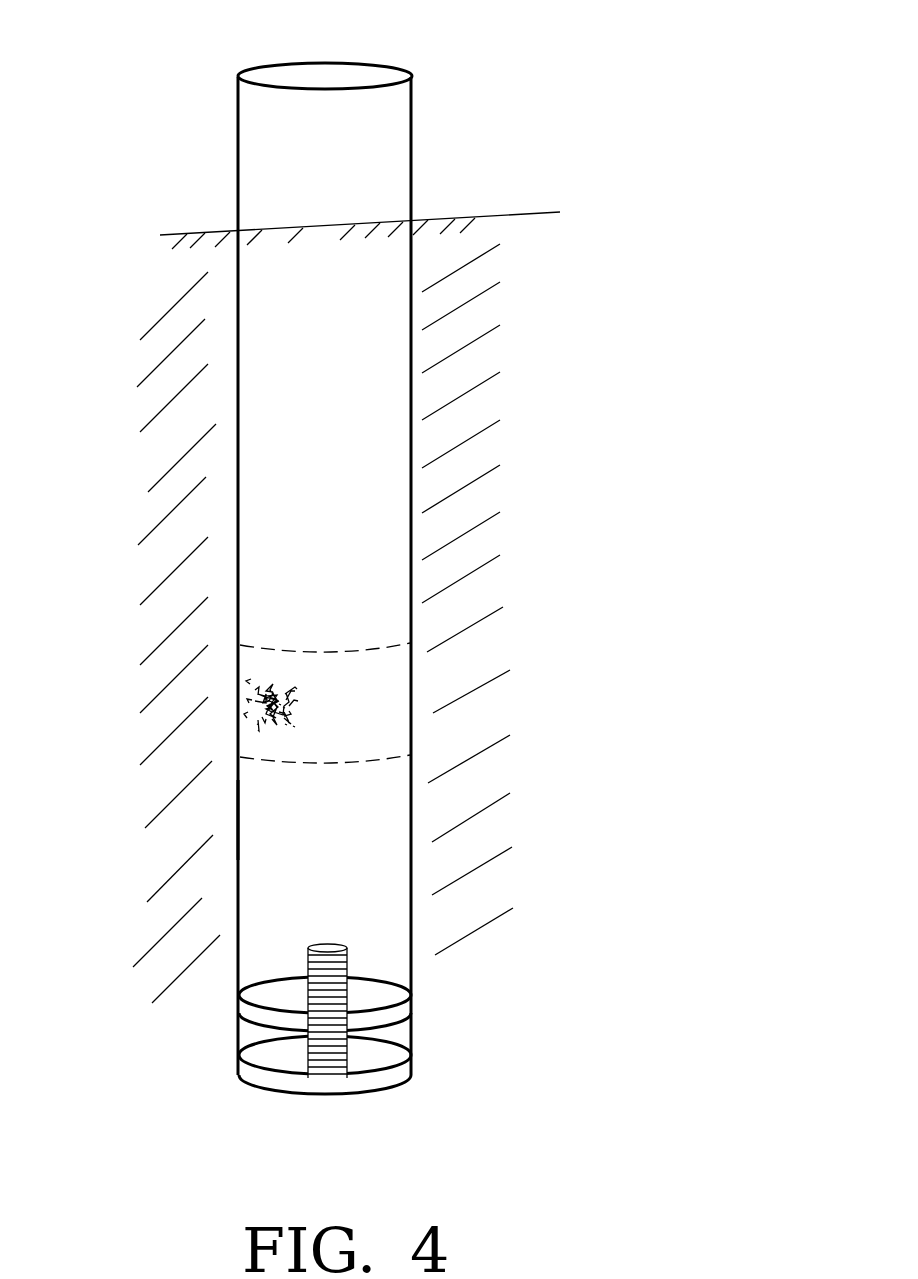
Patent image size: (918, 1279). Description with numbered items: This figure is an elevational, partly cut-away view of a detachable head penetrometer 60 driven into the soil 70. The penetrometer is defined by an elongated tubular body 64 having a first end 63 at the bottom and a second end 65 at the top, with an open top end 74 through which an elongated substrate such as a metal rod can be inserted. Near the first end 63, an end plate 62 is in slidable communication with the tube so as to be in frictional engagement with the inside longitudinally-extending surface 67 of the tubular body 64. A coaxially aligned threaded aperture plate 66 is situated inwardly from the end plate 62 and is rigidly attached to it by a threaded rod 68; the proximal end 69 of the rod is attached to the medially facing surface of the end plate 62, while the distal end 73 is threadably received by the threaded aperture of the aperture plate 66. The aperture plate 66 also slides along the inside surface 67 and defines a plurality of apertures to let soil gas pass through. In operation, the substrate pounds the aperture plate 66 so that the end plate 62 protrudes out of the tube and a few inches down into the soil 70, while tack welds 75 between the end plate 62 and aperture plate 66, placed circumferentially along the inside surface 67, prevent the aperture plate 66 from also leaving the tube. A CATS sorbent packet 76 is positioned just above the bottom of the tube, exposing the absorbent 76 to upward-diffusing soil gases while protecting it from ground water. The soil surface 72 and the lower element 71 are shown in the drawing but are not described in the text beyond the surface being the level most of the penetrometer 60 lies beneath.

The penetrometer 60 is at (645, 885).
The end plate 62 is at (390, 1087).
The first end 63 is at (248, 1085).
The elongated tubular body 64 is at (237, 502).
The second end 65 is at (240, 76).
The threaded aperture plate 66 is at (348, 1058).
The inside longitudinally-extending surface 67 is at (243, 853).
The threaded rod 68 is at (388, 1017).
The proximal end 69 is at (300, 1063).
The soil 70 is at (507, 325).
The lower plate 71 is at (263, 1062).
The ground surface 72 is at (448, 217).
The distal end 73 is at (308, 952).
The open top end 74 is at (337, 70).
The tack welds 75 is at (238, 1046).
The CATS sorbent packet 76 is at (307, 707).